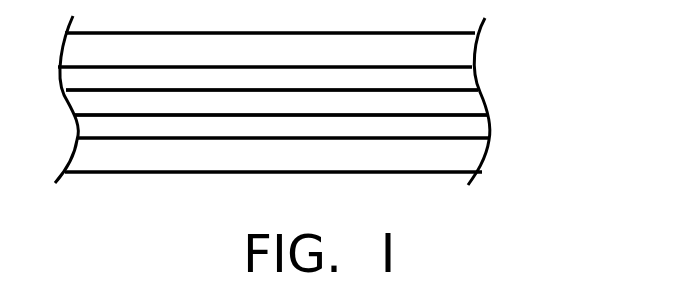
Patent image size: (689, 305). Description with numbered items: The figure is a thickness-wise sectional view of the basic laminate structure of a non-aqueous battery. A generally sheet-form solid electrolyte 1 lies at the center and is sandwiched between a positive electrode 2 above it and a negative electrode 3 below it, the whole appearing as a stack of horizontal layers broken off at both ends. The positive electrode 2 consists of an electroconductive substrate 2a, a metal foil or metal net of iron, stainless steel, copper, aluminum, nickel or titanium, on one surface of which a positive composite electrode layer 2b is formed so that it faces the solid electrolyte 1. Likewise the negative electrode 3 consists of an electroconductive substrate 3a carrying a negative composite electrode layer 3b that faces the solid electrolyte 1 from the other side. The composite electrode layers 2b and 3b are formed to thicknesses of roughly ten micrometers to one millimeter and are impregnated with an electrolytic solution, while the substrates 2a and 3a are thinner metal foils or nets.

The solid electrolyte 1 is at (473, 105).
The positive electrode 2 is at (563, 32).
The electroconductive substrate 2a is at (458, 53).
The positive composite electrode layer 2b is at (458, 83).
The negative electrode 3 is at (563, 125).
The electroconductive substrate 3a is at (473, 160).
The negative composite electrode layer 3b is at (480, 128).